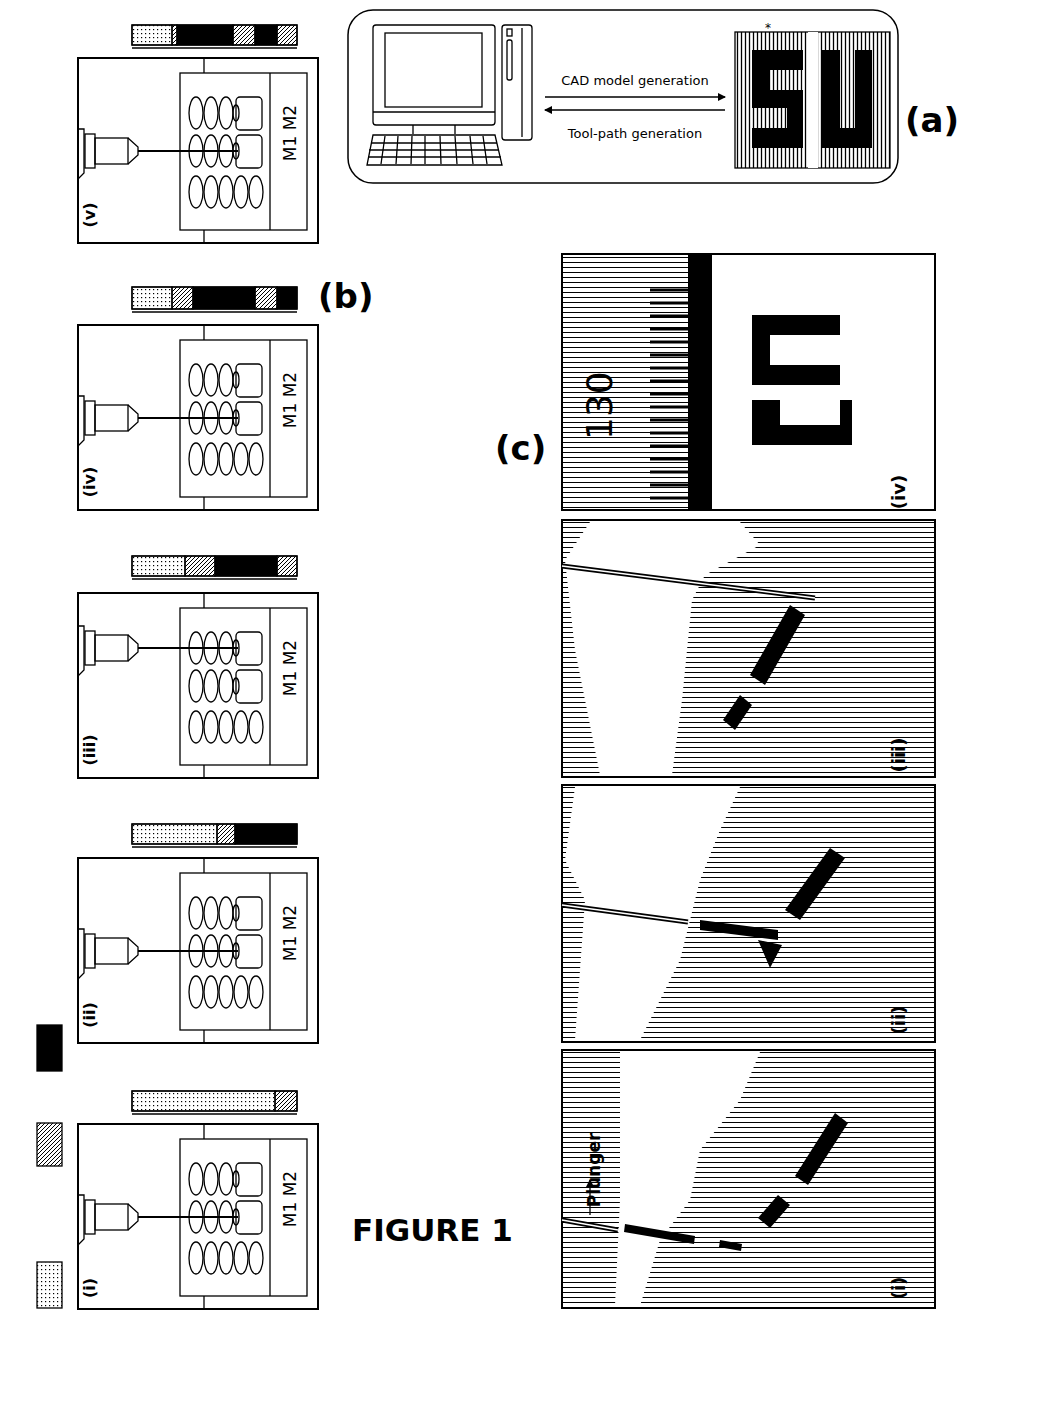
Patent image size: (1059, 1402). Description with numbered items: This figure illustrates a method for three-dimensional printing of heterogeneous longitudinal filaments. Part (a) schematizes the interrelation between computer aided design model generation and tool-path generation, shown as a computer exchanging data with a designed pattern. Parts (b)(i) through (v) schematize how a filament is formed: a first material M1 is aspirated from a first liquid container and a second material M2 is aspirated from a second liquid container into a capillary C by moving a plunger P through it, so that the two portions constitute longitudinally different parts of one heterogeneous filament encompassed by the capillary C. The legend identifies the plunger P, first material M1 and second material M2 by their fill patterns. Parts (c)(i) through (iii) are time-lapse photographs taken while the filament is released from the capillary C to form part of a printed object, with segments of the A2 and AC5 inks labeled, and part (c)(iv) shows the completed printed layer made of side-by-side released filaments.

The capillary C is at (165, 46).
The first material M1 is at (49, 1125).
The second material M2 is at (49, 1028).
The plunger P is at (49, 1273).
The A2 ink A2 is at (750, 1242).
The AC5 ink AC5 is at (730, 1250).